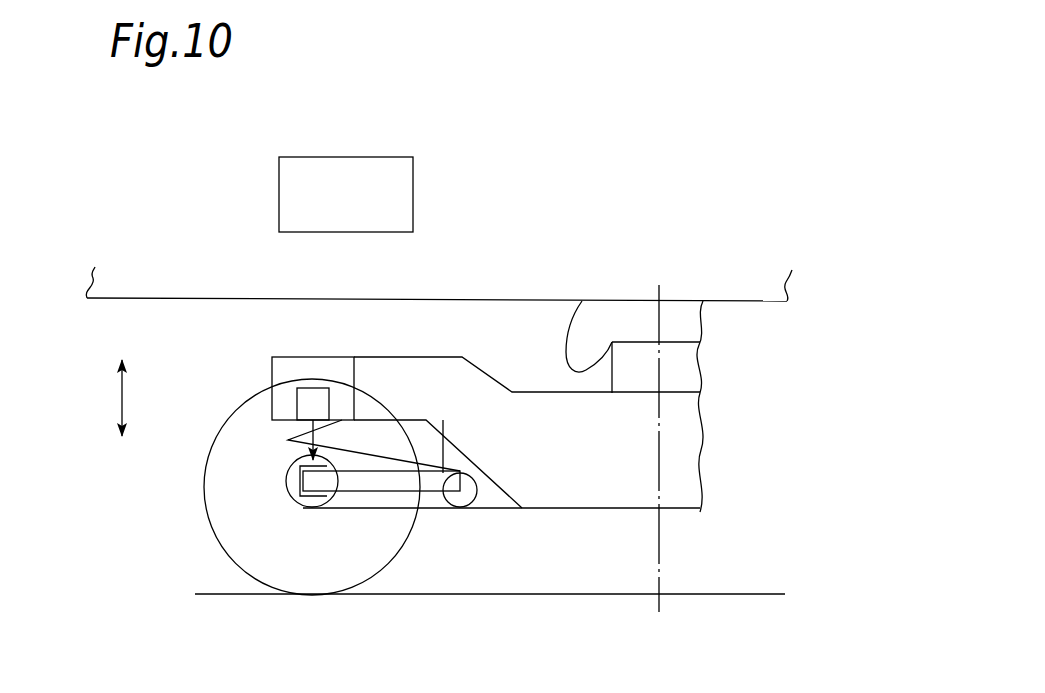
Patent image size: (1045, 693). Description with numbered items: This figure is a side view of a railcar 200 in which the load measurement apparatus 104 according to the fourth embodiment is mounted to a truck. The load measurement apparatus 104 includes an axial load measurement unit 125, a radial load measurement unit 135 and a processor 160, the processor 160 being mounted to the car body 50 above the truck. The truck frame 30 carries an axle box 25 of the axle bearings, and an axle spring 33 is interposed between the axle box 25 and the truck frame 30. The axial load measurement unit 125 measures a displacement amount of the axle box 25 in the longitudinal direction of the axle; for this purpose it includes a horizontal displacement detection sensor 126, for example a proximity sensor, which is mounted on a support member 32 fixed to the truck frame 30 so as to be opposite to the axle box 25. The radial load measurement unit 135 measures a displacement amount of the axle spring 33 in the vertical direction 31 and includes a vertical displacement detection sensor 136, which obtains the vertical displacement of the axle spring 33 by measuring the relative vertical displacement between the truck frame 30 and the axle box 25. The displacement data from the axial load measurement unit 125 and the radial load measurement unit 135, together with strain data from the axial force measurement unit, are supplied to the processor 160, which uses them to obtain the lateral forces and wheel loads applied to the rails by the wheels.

The railcar 200 is at (182, 159).
The processor 160 is at (380, 157).
The load measurement apparatus 104 is at (504, 242).
The car body 50 is at (715, 267).
The truck frame 30 is at (689, 390).
The radial load measurement unit 135 is at (330, 373).
The vertical displacement detection sensor 136 is at (308, 388).
The axial load measurement unit 125 is at (359, 497).
The axle spring 33 is at (287, 441).
The support member 32 is at (401, 484).
The horizontal displacement detection sensor 126 is at (311, 498).
The axle box 25 is at (284, 483).
The vertical direction 31 is at (122, 398).